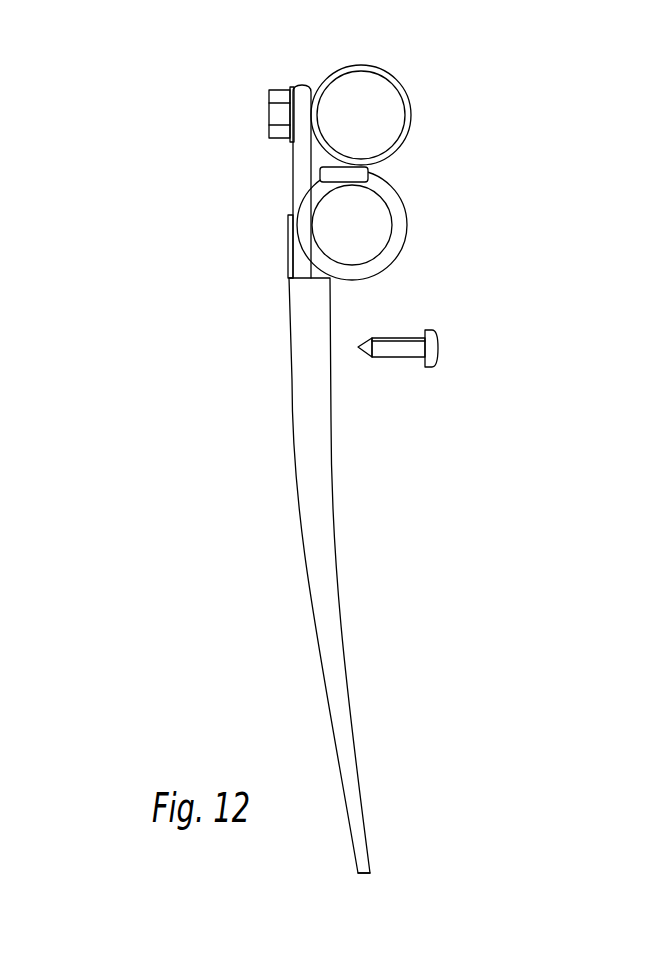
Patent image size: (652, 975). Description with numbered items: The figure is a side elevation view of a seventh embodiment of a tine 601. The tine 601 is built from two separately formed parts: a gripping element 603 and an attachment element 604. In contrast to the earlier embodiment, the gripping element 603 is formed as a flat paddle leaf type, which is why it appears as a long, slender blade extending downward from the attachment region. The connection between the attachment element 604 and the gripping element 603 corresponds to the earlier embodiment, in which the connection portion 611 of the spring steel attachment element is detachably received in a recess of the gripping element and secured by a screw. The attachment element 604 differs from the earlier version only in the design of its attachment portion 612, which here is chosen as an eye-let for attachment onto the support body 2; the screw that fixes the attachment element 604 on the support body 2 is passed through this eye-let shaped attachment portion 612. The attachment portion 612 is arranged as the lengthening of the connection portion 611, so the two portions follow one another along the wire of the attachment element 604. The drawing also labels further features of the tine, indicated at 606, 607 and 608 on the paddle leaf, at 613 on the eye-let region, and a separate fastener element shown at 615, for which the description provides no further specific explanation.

The support body 2 is at (400, 87).
The tine 601 is at (615, 102).
The gripping element 603 is at (432, 479).
The attachment element 604 is at (373, 230).
The front side of tine 606 is at (336, 600).
The rear side of tine 607 is at (312, 602).
The tine tip 608 is at (359, 876).
The connection portion 611 is at (289, 268).
The attachment portion 612 is at (315, 163).
The ring portion of coil 613 is at (394, 253).
The securing pin 615 is at (433, 345).